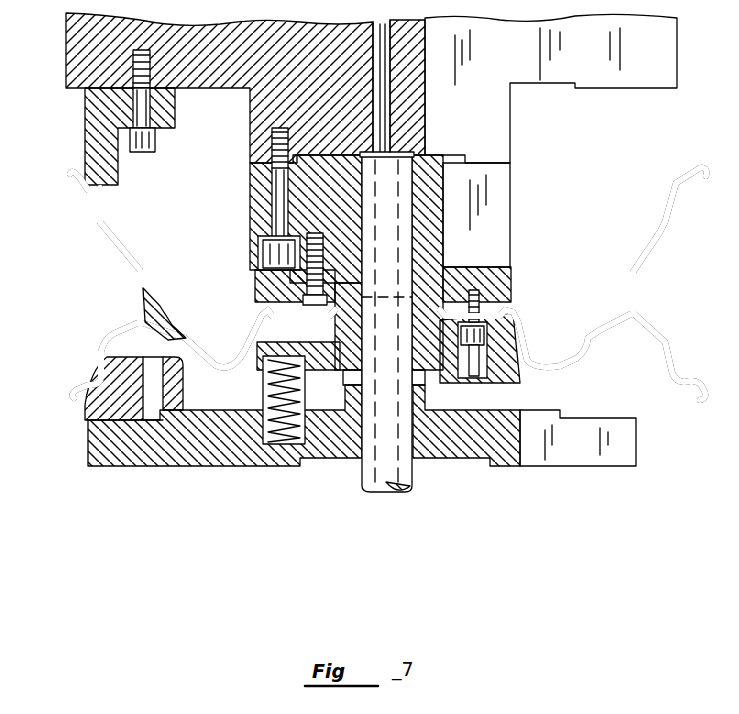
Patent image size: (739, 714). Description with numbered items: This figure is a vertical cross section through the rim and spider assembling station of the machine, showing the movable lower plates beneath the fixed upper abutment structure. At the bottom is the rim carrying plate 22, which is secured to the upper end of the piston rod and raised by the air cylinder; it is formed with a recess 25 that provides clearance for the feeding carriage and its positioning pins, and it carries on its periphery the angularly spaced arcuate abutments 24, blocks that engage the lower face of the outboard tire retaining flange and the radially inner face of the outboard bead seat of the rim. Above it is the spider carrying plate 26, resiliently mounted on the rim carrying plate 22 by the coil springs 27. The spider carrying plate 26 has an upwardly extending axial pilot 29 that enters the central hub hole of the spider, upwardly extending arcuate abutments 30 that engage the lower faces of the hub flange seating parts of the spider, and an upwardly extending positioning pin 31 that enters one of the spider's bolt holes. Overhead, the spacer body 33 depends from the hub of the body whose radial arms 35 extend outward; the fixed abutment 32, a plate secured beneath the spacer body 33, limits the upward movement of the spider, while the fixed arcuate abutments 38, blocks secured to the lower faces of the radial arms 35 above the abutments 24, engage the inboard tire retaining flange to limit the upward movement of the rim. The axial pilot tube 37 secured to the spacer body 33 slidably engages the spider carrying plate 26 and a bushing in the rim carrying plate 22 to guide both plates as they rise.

The rim carrying plate 22 is at (132, 455).
The arcuate abutments 24 is at (183, 380).
The recess 25 is at (570, 455).
The spider carrying plate 26 is at (505, 386).
The coil springs 27 is at (262, 400).
The axial pilot 29 is at (443, 265).
The arcuate abutments 30 is at (515, 328).
The positioning pin 31 is at (513, 295).
The fixed abutment 32 is at (258, 283).
The spacer body 33 is at (256, 180).
The radial arms 35 is at (72, 38).
The axial pilot tube 37 is at (413, 480).
The fixed arcuate abutments 38 is at (92, 133).